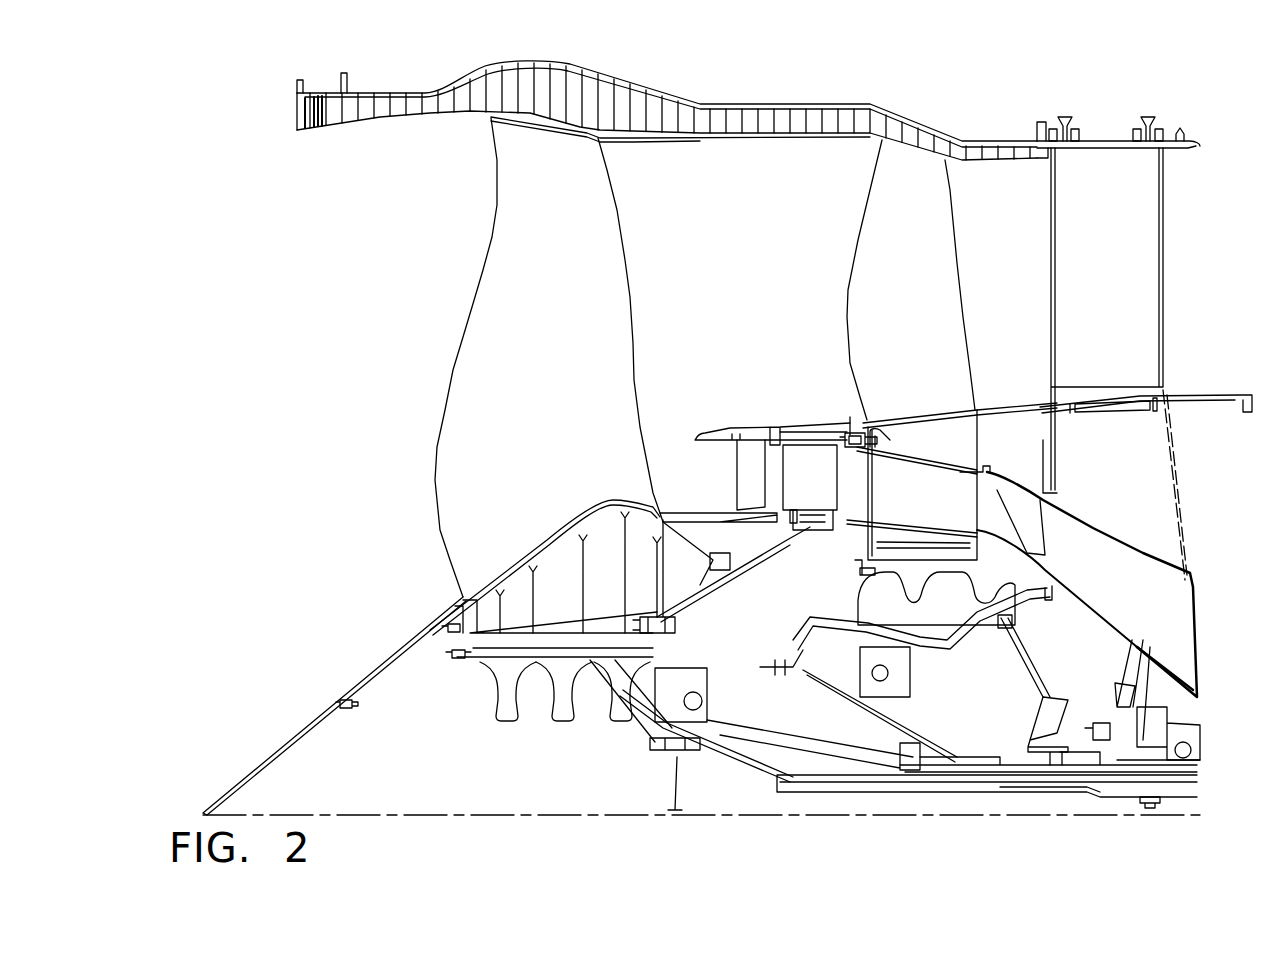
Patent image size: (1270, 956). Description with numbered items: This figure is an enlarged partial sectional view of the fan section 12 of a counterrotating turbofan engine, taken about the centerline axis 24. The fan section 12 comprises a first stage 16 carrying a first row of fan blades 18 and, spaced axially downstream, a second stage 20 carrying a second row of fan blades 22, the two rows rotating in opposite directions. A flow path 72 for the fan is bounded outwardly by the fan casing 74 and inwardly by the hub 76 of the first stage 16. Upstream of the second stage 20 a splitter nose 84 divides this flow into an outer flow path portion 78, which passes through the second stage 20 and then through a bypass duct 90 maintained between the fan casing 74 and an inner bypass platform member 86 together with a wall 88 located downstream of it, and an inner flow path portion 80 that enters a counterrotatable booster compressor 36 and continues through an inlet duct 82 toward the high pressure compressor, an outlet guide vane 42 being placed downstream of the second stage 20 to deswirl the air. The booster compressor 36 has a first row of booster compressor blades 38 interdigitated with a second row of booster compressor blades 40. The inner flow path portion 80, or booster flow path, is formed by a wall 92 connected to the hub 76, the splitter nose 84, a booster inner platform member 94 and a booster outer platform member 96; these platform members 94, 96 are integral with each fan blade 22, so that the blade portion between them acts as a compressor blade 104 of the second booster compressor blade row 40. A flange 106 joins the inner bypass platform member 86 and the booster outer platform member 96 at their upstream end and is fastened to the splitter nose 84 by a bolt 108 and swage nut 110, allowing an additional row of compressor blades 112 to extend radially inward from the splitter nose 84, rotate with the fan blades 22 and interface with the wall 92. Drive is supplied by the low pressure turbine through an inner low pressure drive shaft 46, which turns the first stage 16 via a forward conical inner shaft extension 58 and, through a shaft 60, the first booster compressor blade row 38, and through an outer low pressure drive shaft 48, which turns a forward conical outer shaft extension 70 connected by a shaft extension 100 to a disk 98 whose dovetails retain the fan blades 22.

The fan section 12 is at (962, 84).
The first stage 16 is at (440, 596).
The first row of fan blades 18 is at (540, 256).
The second stage 20 is at (835, 559).
The second row of fan blades 22 is at (890, 256).
The centerline axis 24 is at (432, 812).
The booster compressor 36 is at (742, 415).
The first row of booster compressor blades 38 is at (787, 426).
The second row of booster compressor blades 40 is at (868, 488).
The outlet guide vane 42 is at (1023, 493).
The inner low pressure drive shaft 46 is at (947, 790).
The outer low pressure drive shaft 48 is at (1068, 778).
The forward conical inner shaft extension 58 is at (760, 756).
The shaft 60 is at (722, 605).
The forward conical outer shaft extension 70 is at (915, 732).
The flow path 72 is at (300, 390).
The fan casing 74 is at (763, 137).
The hub 76 is at (546, 540).
The outer flow path portion 78 is at (790, 291).
The inner flow path portion 80 is at (700, 485).
The inlet duct 82 is at (1095, 522).
The splitter nose 84 is at (708, 435).
The inner bypass platform member 86 is at (940, 420).
The wall 88 is at (1027, 415).
The bypass duct 90 is at (1016, 160).
The wall 92 is at (704, 518).
The booster inner platform member 94 is at (903, 532).
The booster outer platform member 96 is at (965, 470).
The disk 98 is at (960, 587).
The shaft extension 100 is at (818, 632).
The compressor blade 104 is at (886, 496).
The flange 106 is at (892, 448).
The bolt 108 is at (870, 437).
The swage nut 110 is at (852, 433).
The compressor blades 112 is at (740, 465).